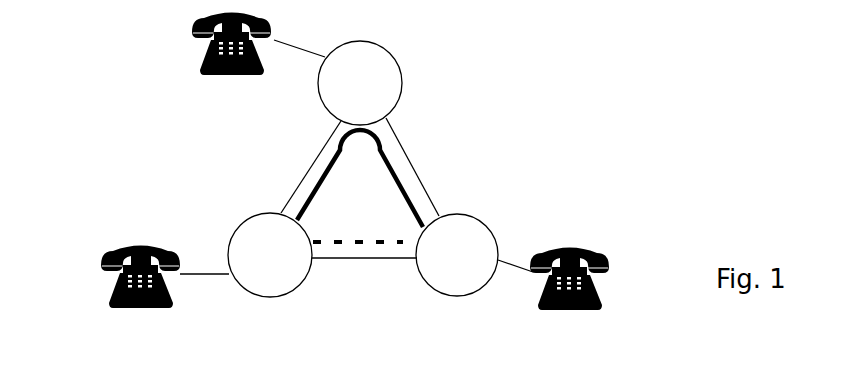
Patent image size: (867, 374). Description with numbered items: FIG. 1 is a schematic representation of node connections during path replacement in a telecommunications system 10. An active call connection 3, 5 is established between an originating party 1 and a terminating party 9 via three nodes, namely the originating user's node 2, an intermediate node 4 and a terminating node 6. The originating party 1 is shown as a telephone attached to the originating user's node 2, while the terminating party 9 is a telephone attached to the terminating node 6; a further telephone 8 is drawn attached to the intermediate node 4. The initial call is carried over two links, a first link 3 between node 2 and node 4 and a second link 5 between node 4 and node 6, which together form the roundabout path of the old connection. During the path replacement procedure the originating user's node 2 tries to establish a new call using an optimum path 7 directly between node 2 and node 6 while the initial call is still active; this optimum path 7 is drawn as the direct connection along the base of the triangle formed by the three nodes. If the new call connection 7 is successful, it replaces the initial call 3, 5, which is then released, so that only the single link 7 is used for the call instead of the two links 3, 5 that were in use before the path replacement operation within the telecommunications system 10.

The originating party 1 is at (118, 242).
The originating user's node 2 is at (260, 242).
The call connection link 3 is at (313, 163).
The intermediate node 4 is at (377, 87).
The call connection link 5 is at (415, 165).
The terminating node 6 is at (467, 230).
The optimum path 7 is at (352, 258).
The telephone connected to node 4 8 is at (200, 63).
The terminating party 9 is at (568, 243).
The telecommunications system 10 is at (472, 153).